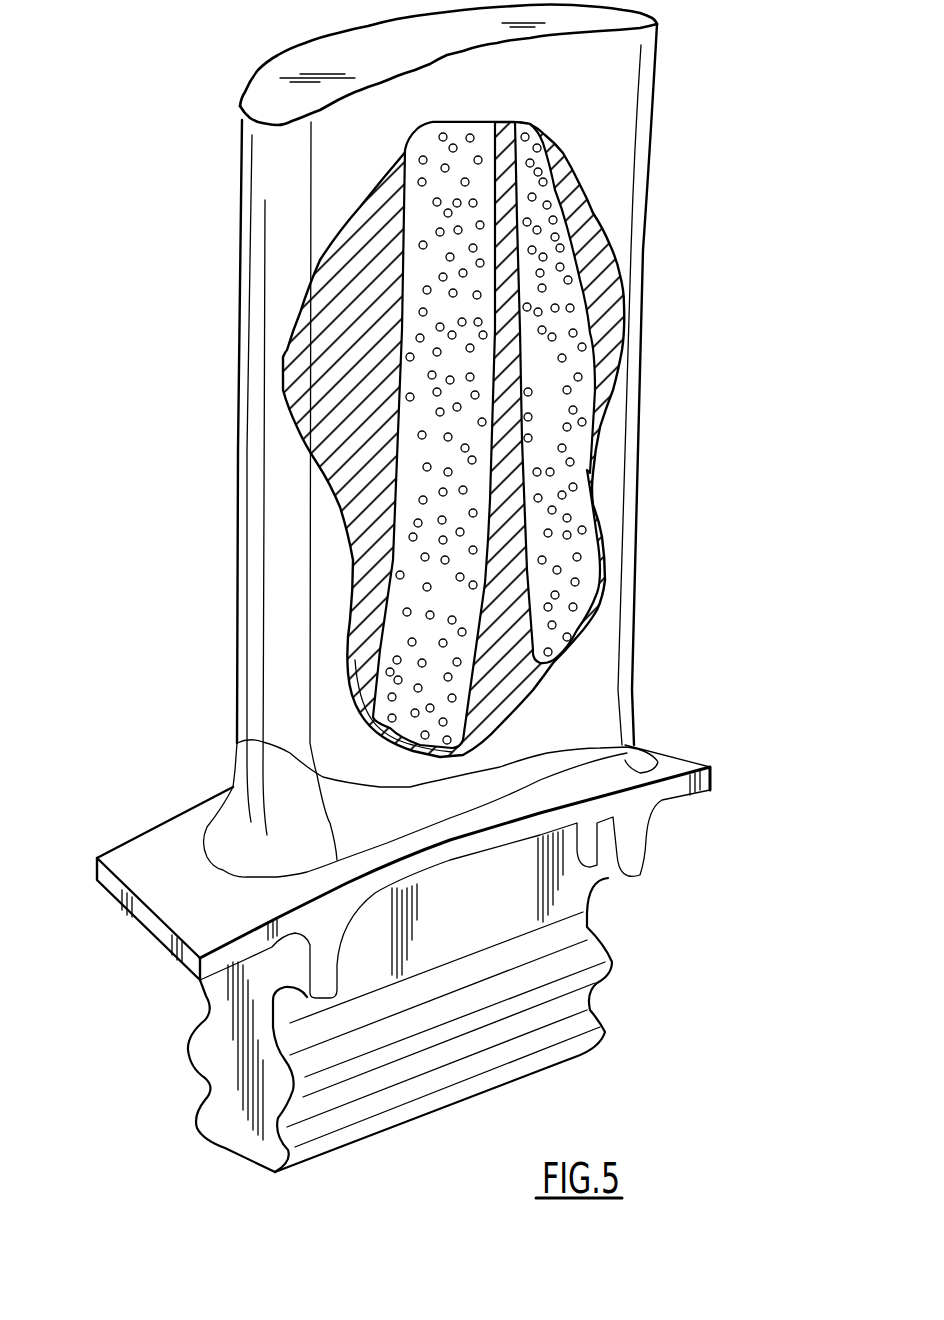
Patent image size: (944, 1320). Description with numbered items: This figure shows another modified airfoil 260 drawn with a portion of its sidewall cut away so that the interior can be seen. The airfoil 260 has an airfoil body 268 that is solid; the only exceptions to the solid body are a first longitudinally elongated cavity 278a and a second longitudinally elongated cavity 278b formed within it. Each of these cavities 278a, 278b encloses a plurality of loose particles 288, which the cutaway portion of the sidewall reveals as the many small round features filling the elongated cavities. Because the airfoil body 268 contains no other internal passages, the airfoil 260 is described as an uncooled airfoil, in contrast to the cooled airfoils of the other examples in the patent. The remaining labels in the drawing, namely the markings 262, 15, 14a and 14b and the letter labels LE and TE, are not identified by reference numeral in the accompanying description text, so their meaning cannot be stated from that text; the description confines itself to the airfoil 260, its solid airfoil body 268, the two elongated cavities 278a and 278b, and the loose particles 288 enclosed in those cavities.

The airfoil 260 is at (113, 705).
The airfoil 262 is at (456, 441).
The airfoil body 268 is at (619, 689).
The coating region 15 is at (331, 353).
The first longitudinally elongated cavity 278a is at (573, 287).
The second longitudinally elongated cavity 278b is at (468, 359).
The loose particles 288 is at (416, 473).
The first cooling hole row 14a is at (469, 420).
The second cooling hole row 14b is at (577, 541).
The leading edge LE is at (226, 213).
The trailing edge TE is at (668, 122).